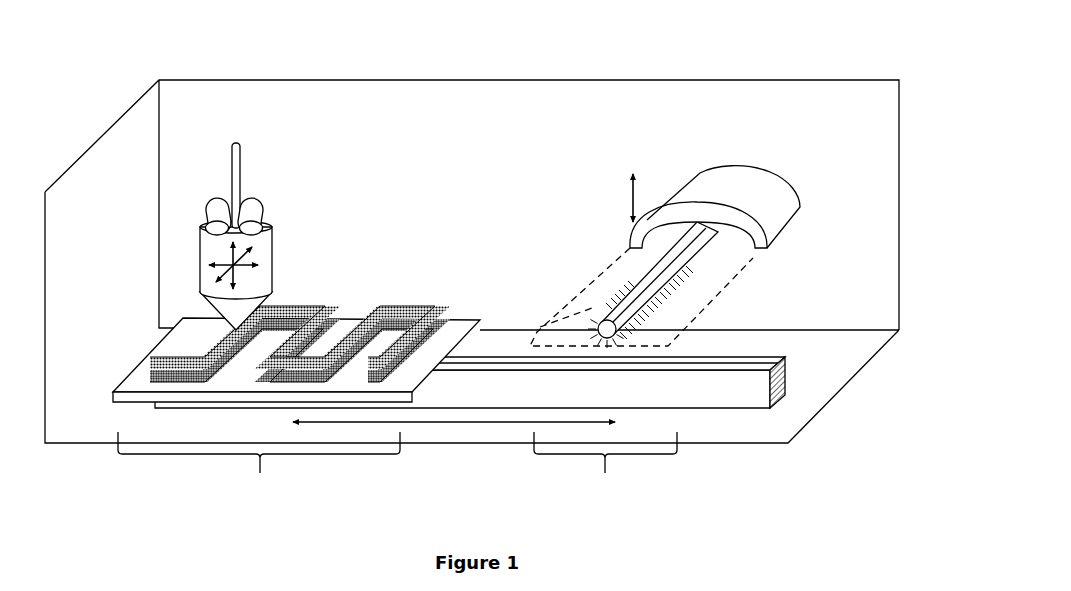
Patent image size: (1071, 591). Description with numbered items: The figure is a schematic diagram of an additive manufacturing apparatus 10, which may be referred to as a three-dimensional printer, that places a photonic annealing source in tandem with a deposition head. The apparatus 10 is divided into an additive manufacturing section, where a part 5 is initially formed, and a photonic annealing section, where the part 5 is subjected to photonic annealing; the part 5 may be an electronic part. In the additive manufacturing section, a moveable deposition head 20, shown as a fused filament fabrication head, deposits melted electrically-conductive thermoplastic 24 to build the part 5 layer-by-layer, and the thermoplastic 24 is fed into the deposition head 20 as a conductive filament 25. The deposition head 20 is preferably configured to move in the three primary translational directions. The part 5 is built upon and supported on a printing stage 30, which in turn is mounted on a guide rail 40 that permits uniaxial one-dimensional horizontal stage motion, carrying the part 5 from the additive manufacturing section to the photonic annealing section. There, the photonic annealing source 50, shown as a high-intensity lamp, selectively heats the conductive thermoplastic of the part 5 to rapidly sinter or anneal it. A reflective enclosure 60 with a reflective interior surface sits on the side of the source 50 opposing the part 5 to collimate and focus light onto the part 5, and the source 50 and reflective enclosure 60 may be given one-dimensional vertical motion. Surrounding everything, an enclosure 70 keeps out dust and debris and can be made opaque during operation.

The additive manufacturing apparatus 10 is at (488, 264).
The deposition head 20 is at (269, 216).
The electrically-conductive thermoplastic 24 is at (250, 158).
The conductive filament 25 is at (280, 165).
The part 5 is at (428, 309).
The printing stage 30 is at (217, 403).
The guide rail 40 is at (681, 396).
The photonic annealing source 50 is at (688, 267).
The reflective enclosure 60 is at (752, 181).
The enclosure 70 is at (894, 70).